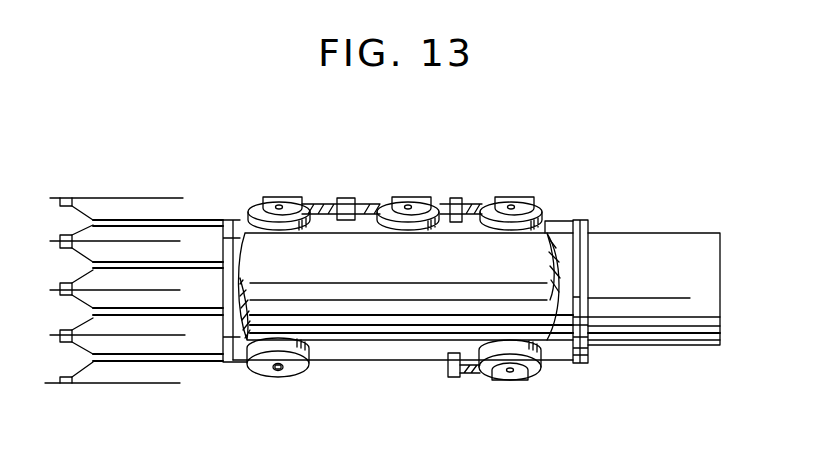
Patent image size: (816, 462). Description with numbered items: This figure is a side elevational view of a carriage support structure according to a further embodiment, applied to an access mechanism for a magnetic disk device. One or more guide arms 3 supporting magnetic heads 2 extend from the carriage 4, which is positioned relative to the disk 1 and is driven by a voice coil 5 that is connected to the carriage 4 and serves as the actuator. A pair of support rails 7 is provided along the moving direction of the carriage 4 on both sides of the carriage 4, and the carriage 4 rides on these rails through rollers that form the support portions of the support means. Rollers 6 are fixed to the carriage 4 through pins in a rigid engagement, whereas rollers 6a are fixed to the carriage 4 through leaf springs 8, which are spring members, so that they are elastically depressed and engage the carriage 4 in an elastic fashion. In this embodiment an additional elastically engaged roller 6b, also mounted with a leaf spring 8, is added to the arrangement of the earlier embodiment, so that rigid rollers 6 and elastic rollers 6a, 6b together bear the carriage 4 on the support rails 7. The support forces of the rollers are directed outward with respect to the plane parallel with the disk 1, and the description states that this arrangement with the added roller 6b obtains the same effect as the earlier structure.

The disk 1 is at (133, 195).
The magnetic heads 2 is at (70, 198).
The guide arms 3 is at (192, 219).
The carriage 4 is at (574, 221).
The voice coil 5 is at (668, 232).
The rollers 6 is at (297, 368).
The rollers 6a is at (258, 200).
The elastically engaged roller 6b is at (421, 198).
The support rails 7 is at (242, 345).
The leaf springs 8 is at (328, 203).